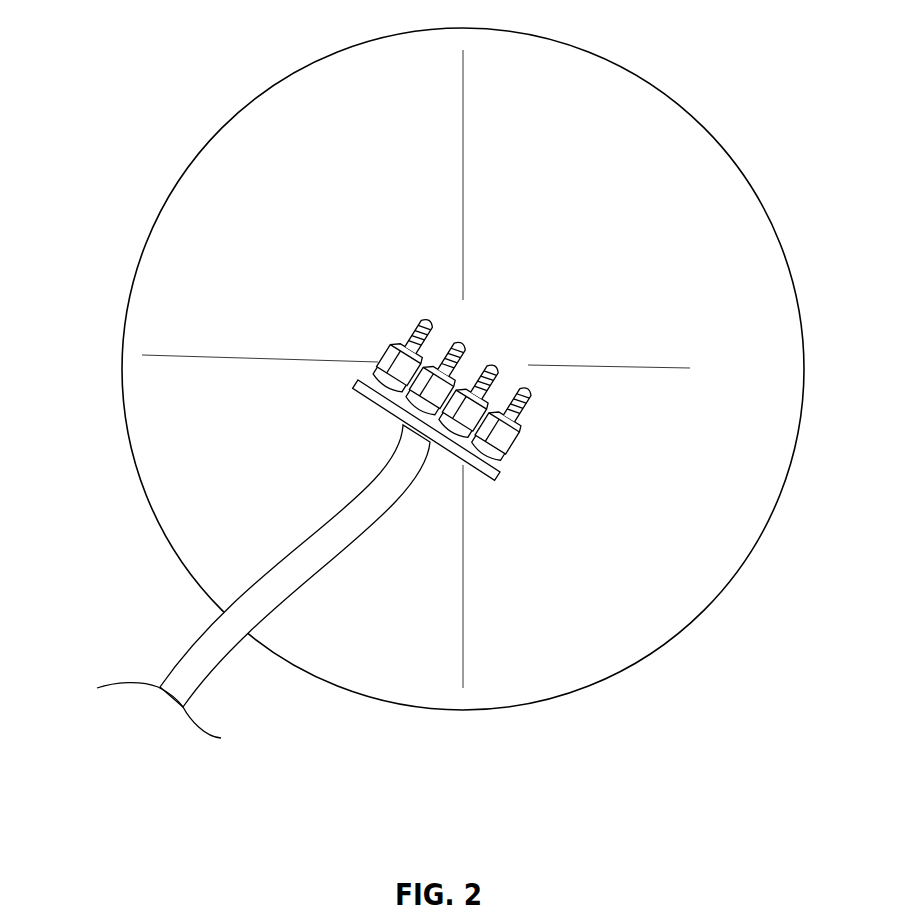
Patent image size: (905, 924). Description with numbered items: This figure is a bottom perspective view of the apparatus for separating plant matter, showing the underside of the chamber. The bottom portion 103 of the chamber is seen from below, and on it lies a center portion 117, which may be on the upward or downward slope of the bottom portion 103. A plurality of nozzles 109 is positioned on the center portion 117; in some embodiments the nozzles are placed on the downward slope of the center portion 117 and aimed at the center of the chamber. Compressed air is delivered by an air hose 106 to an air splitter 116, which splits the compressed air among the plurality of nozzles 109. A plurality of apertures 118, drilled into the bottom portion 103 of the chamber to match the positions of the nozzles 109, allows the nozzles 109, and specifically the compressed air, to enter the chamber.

The bottom portion 103 is at (238, 142).
The air hose 106 is at (183, 650).
The plurality of nozzles 109 is at (412, 338).
The air splitter 116 is at (356, 383).
The center portion 117 is at (509, 352).
The plurality of apertures 118 is at (530, 393).